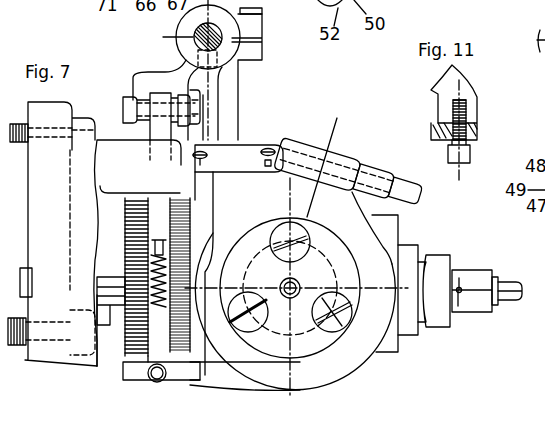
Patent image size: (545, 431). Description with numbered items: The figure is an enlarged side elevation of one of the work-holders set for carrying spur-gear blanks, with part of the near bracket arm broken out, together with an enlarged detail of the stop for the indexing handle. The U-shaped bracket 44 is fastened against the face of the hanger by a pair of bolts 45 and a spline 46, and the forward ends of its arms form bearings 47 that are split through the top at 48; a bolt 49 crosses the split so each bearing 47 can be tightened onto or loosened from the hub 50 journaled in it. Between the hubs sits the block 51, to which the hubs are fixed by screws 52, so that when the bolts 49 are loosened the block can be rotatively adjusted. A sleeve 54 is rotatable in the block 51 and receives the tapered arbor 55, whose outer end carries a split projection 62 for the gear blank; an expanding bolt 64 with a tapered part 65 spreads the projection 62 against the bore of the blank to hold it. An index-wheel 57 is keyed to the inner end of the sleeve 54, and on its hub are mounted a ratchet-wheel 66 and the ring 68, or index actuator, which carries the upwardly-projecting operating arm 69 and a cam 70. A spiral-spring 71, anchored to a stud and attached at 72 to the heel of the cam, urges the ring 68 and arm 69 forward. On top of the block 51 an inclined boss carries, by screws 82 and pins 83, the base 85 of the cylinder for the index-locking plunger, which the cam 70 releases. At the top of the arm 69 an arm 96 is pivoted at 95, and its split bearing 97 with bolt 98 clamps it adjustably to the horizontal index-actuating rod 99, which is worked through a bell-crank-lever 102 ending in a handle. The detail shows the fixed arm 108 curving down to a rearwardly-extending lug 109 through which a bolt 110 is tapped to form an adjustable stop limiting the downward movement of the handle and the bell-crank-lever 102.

In FIG. 7, the U-shaped bracket 44 is at (61, 234).
In FIG. 7, the bolt 45 is at (18, 128).
In FIG. 7, the spline 46 is at (43, 253).
In FIG. 7, the bearing 47 is at (336, 368).
In FIG. 7, the split 48 is at (328, 154).
In FIG. 7, the bolt 49 is at (388, 184).
In FIG. 7, the hub 50 is at (290, 288).
In FIG. 7, the block 51 is at (381, 325).
In FIG. 7, the screws 52 is at (250, 302).
In FIG. 7, the sleeve 54 is at (408, 325).
In FIG. 7, the arbor 55 is at (430, 270).
In FIG. 7, the index-wheel 57 is at (135, 342).
In FIG. 7, the split projection 62 is at (467, 312).
In FIG. 7, the expanding bolt 64 is at (509, 300).
In FIG. 7, the tapered part 65 is at (495, 277).
In FIG. 7, the ratchet-wheel 66 is at (180, 363).
In FIG. 7, the ring 68 is at (157, 343).
In FIG. 7, the operating arm 69 is at (158, 125).
In FIG. 7, the cam 70 is at (157, 208).
In FIG. 7, the spiral-spring 71 is at (157, 385).
In FIG. 7, the spring attachment point 72 is at (156, 252).
In FIG. 7, the screws 82 is at (268, 145).
In FIG. 7, the pins 83 is at (218, 138).
In FIG. 7, the base 85 is at (197, 260).
In FIG. 7, the pivot 95 is at (197, 108).
In FIG. 7, the arm 96 is at (178, 73).
In FIG. 7, the split bearing 97 is at (228, 48).
In FIG. 7, the bolt 98 is at (262, 12).
In FIG. 7, the index-actuating rod 99 is at (196, 33).
In FIG. 7, the bell-crank-lever 102 is at (213, 118).
In FIG. 11, the fixed arm 108 is at (446, 95).
In FIG. 11, the lug 109 is at (479, 134).
In FIG. 11, the stop bolt 110 is at (468, 103).